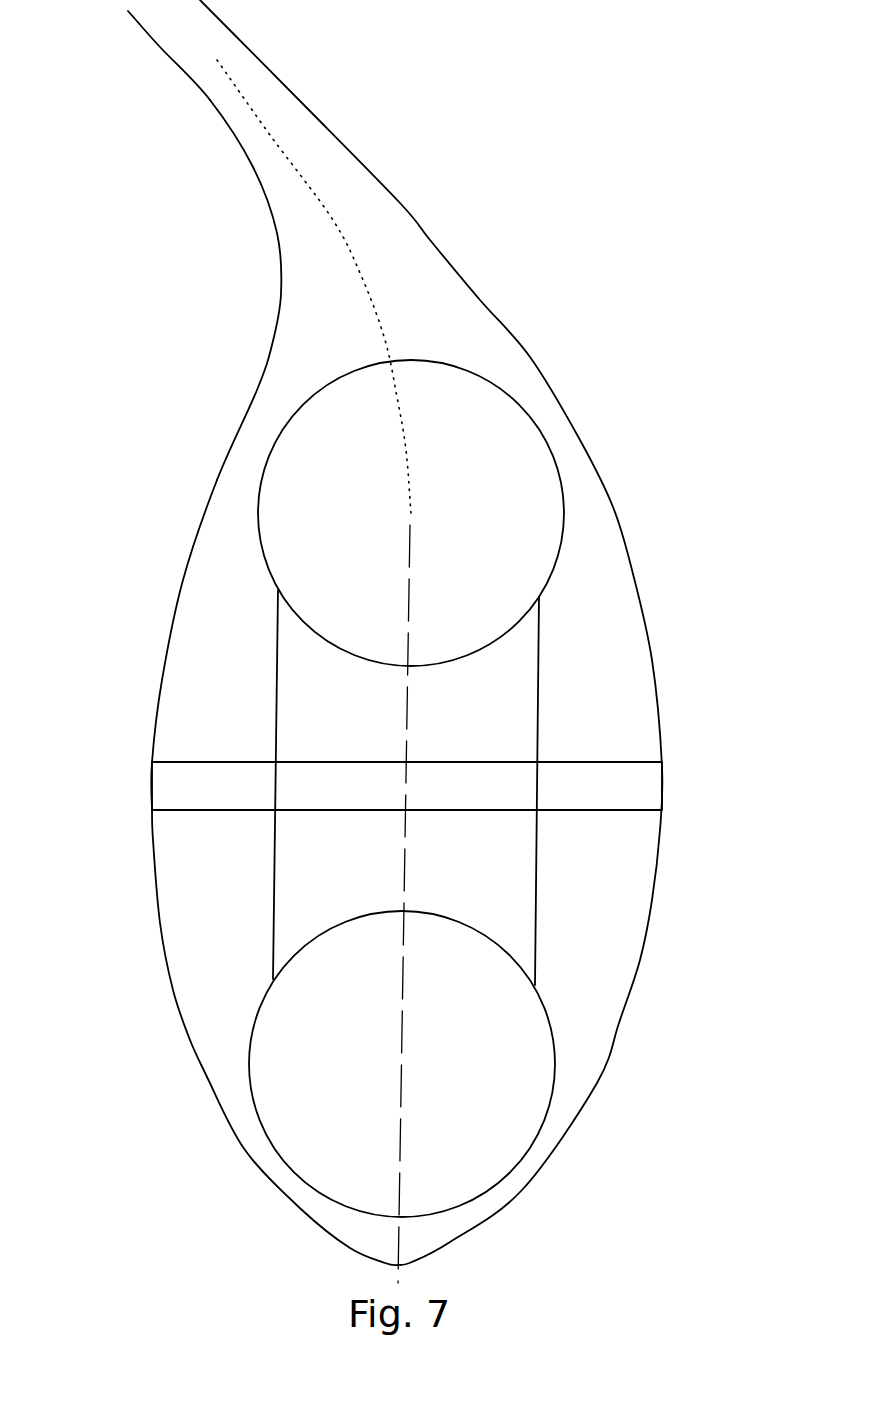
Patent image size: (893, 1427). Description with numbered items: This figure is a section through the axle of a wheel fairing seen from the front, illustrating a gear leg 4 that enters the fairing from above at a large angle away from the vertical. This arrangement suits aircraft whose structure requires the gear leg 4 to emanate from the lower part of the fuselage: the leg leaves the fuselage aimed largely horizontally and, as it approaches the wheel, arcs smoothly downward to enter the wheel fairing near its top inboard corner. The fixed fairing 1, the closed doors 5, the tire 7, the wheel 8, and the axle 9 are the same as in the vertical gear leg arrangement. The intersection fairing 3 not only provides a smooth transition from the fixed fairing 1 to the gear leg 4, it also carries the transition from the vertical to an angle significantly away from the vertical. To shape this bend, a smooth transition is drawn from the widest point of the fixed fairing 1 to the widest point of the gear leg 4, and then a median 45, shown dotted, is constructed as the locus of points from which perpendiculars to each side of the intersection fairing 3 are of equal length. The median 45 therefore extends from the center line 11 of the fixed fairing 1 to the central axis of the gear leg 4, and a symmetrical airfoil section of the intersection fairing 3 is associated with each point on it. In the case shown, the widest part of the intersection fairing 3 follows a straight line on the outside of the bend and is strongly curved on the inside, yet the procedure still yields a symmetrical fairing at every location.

The fixed fairing 1 is at (176, 590).
The intersection fairing 3 is at (281, 294).
The gear leg 4 is at (160, 47).
The closed doors 5 is at (302, 1210).
The tire 7 is at (267, 1138).
The wheel 8 is at (273, 855).
The axle 9 is at (210, 760).
The center line 11 is at (587, 904).
The median 45 is at (338, 232).